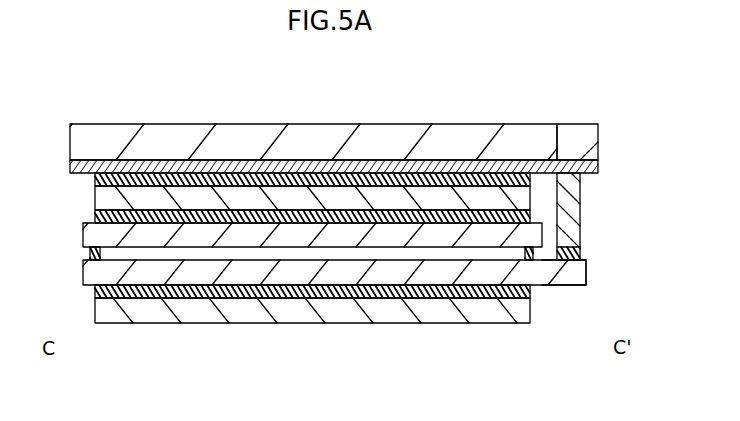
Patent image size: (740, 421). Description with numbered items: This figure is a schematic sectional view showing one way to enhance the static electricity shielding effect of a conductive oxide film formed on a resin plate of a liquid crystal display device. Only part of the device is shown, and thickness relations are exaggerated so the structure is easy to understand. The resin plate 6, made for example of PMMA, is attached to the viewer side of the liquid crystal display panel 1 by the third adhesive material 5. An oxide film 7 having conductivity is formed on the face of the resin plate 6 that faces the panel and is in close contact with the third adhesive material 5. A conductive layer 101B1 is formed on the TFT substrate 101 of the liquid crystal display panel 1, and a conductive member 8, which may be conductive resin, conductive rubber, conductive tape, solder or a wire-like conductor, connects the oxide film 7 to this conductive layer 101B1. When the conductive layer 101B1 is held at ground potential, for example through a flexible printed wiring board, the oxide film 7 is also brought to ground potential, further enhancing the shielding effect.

The liquid crystal display panel 1 is at (71, 185).
The third adhesive material 5 is at (295, 165).
The resin plate 6 is at (486, 143).
The oxide film 7 is at (557, 124).
The conductive member 8 is at (582, 213).
The TFT substrate 101 is at (399, 272).
The conductive layer 101B1 is at (582, 258).